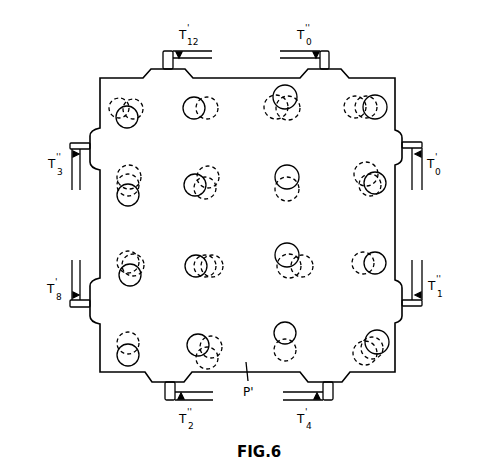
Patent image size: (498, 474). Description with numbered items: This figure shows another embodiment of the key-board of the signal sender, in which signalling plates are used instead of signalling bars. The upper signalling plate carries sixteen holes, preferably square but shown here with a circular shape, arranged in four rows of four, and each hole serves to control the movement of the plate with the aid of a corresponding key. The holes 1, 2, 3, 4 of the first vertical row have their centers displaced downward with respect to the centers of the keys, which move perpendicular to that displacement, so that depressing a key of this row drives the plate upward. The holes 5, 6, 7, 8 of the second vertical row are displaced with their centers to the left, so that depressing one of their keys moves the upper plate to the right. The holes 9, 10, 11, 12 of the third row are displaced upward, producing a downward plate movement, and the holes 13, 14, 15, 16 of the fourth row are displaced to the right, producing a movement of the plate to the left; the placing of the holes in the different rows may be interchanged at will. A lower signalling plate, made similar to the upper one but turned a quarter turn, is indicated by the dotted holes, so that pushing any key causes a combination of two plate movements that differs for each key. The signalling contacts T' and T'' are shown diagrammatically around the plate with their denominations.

The hole 1 is at (135, 126).
The hole 2 is at (133, 206).
The hole 3 is at (133, 286).
The hole 4 is at (140, 355).
The hole 5 is at (193, 119).
The hole 6 is at (188, 194).
The hole 7 is at (188, 276).
The hole 8 is at (192, 336).
The hole 9 is at (295, 92).
The hole 10 is at (299, 172).
The hole 11 is at (296, 247).
The hole 12 is at (293, 325).
The hole 13 is at (386, 108).
The hole 14 is at (383, 192).
The hole 15 is at (379, 275).
The hole 16 is at (390, 341).